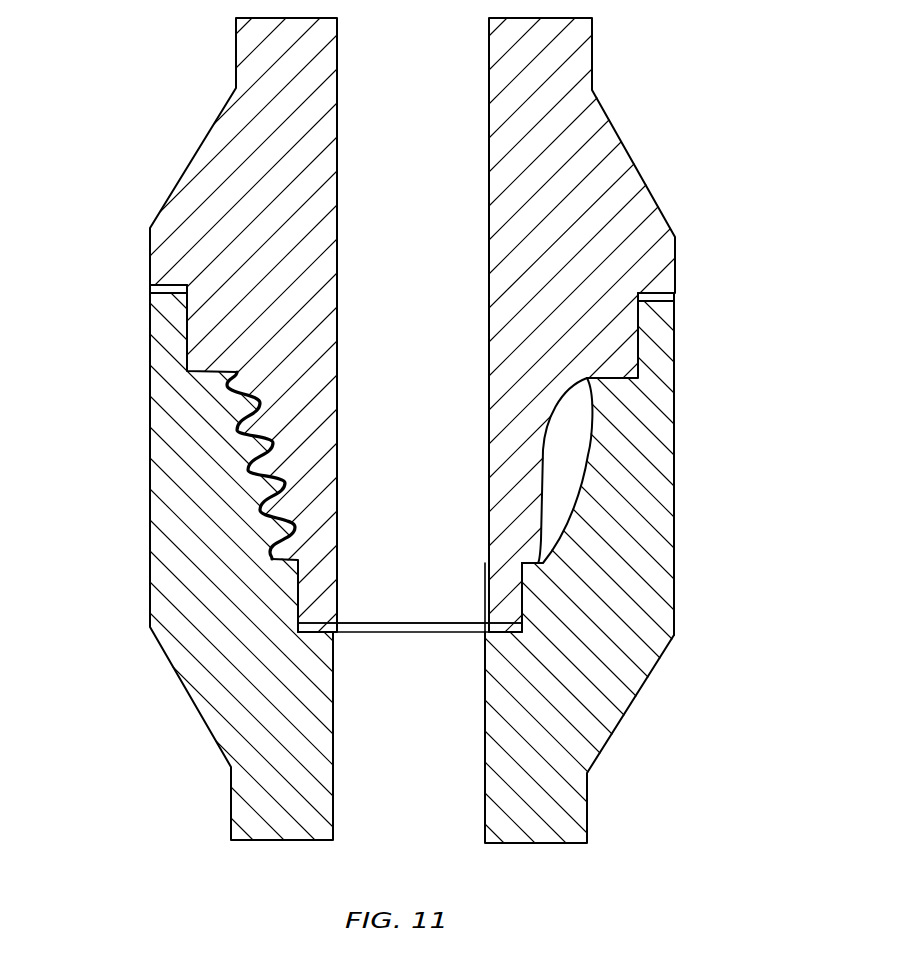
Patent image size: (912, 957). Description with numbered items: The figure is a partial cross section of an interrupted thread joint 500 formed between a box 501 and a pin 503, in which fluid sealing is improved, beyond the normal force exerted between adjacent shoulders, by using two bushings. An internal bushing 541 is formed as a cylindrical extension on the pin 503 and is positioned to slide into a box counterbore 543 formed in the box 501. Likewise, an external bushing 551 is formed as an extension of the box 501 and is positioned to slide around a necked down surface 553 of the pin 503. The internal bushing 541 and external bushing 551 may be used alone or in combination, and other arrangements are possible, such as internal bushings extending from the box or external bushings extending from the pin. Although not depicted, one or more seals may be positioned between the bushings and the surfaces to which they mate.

The interrupted thread joint 500 is at (137, 371).
The box 501 is at (156, 683).
The pin 503 is at (176, 75).
The internal bushing 541 is at (483, 603).
The box counterbore 543 is at (523, 610).
The external bushing 551 is at (676, 325).
The necked down surface 553 is at (637, 327).